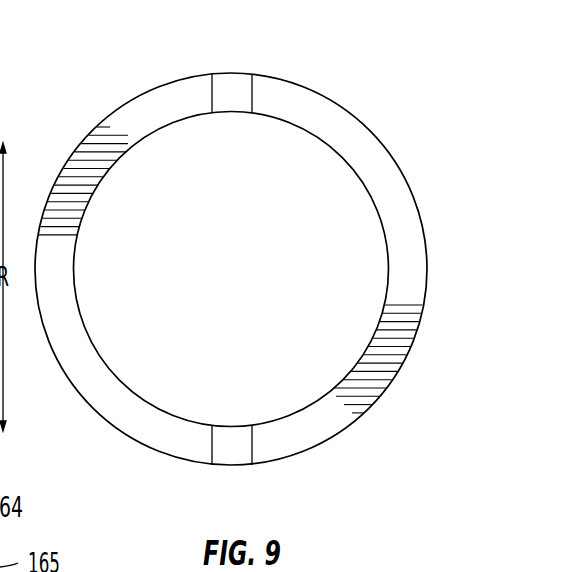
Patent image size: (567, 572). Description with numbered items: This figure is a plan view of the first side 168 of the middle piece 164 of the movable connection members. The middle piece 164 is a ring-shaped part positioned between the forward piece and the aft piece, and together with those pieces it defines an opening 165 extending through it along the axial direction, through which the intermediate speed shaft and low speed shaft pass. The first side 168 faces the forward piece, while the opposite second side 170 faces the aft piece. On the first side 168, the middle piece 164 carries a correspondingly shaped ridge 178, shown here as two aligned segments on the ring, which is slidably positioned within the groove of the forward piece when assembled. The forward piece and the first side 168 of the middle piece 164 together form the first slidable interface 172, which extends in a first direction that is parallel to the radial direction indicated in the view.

The middle piece 164 is at (326, 95).
The opening 165 is at (354, 219).
The first side 168 is at (107, 150).
The second side 170 is at (0, 22).
The first slidable interface 172 is at (138, 407).
The ridge 178 is at (231, 98).